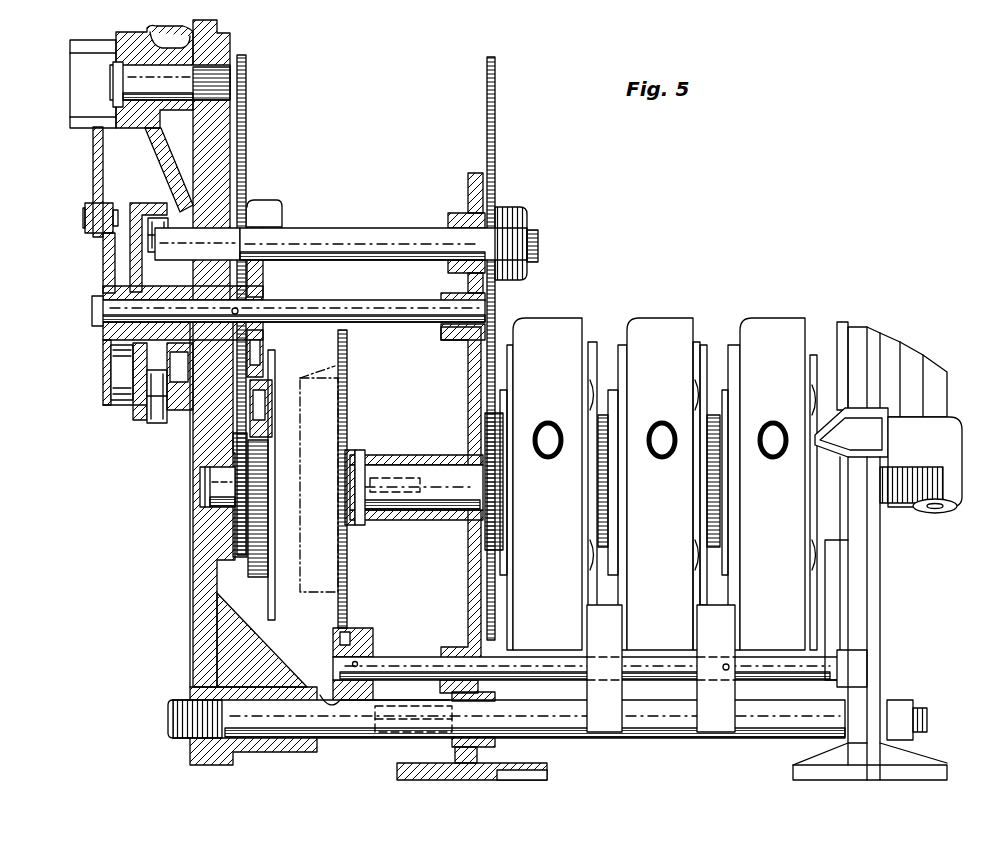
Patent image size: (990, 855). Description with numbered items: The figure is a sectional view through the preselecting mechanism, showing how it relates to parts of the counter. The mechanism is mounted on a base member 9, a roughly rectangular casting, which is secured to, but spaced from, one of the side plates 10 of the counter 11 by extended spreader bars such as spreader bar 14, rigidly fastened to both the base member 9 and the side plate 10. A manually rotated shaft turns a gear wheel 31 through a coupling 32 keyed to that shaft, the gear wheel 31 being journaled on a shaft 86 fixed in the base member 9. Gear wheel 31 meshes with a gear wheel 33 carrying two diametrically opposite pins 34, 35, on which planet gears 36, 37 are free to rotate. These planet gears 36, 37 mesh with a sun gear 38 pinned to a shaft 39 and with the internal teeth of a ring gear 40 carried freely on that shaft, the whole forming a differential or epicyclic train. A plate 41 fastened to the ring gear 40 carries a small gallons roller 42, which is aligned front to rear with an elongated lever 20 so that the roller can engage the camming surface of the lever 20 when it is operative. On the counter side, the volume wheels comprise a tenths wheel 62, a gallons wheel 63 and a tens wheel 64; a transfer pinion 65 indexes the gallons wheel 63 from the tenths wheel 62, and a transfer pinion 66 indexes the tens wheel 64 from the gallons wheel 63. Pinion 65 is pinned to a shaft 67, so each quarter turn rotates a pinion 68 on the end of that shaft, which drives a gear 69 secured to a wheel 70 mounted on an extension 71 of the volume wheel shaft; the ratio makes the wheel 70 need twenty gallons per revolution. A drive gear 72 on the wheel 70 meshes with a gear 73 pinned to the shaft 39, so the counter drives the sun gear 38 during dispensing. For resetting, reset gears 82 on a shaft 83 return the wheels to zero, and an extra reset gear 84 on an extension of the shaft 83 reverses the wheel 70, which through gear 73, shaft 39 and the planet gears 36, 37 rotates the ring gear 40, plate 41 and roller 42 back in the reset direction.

The base member 9 is at (210, 590).
The side plate 10 is at (470, 368).
The counter 11 is at (706, 317).
The spreader bar 14 is at (337, 733).
The lever 20 is at (95, 183).
The gear wheel 31 is at (152, 145).
The coupling 32 is at (96, 45).
The gear wheel 33 is at (184, 415).
The pin 34 is at (182, 238).
The pin 35 is at (160, 417).
The planet gear 36 is at (150, 225).
The planet gear 37 is at (150, 400).
The sun gear 38 is at (160, 283).
The shaft 39 is at (327, 305).
The ring gear 40 is at (149, 203).
The plate 41 is at (107, 265).
The roller 42 is at (90, 208).
The tenths wheel 62 is at (782, 320).
The gallons wheel 63 is at (685, 455).
The tens wheel 64 is at (553, 323).
The transfer pinion 65 is at (712, 735).
The transfer pinion 66 is at (608, 738).
The shaft 67 is at (757, 683).
The pinion 68 is at (355, 640).
The gear 69 is at (345, 592).
The wheel 70 is at (345, 374).
The extension 71 is at (400, 475).
The drive gear 72 is at (275, 360).
The gear 73 is at (265, 342).
The reset gear 82 is at (497, 93).
The shaft 83 is at (367, 236).
The reset gear 84 is at (246, 145).
The shaft 86 is at (112, 88).